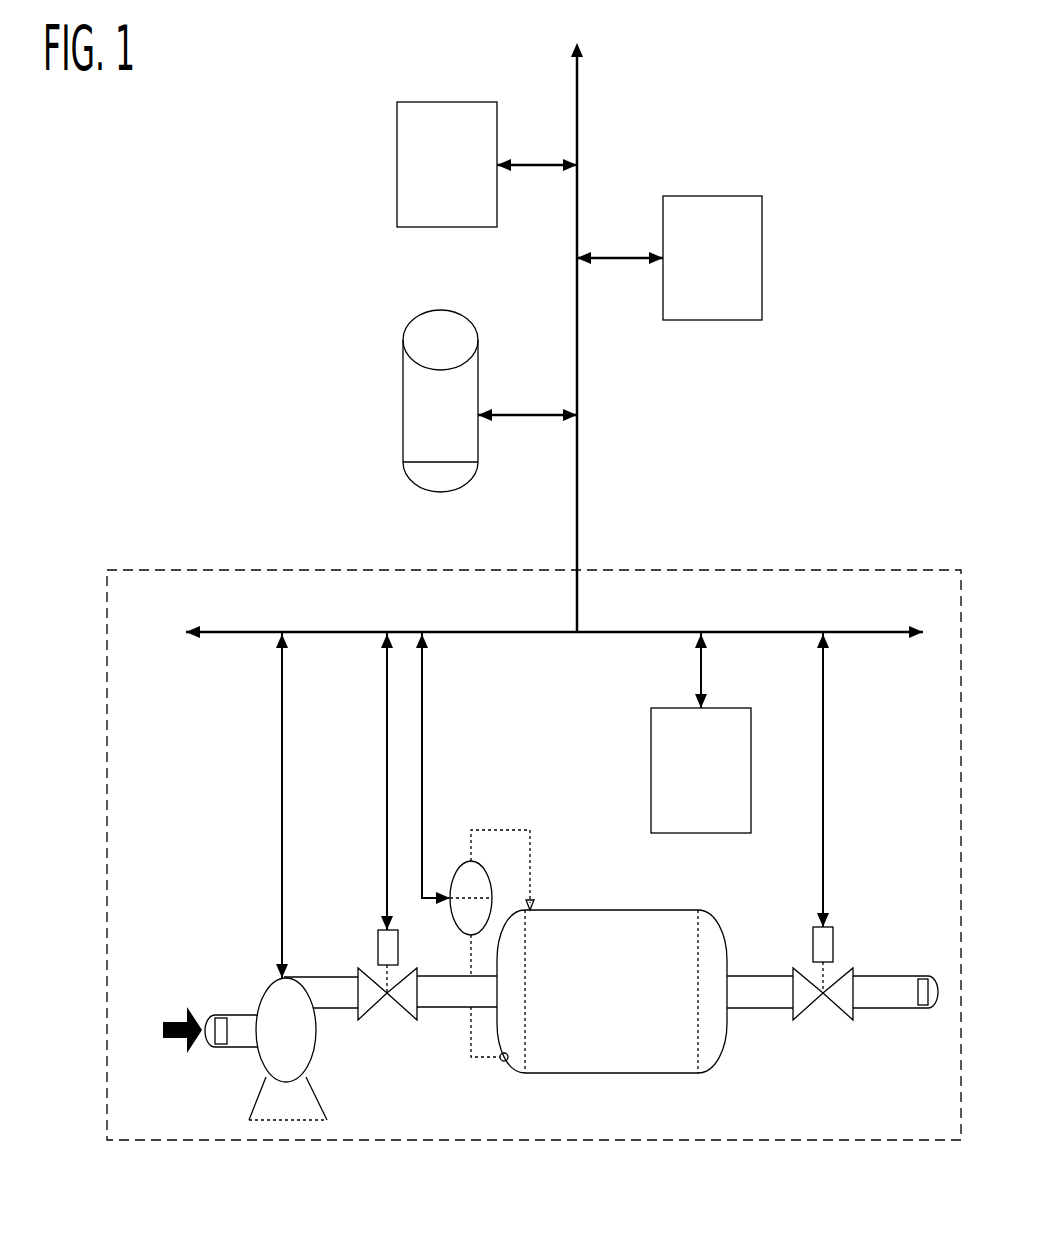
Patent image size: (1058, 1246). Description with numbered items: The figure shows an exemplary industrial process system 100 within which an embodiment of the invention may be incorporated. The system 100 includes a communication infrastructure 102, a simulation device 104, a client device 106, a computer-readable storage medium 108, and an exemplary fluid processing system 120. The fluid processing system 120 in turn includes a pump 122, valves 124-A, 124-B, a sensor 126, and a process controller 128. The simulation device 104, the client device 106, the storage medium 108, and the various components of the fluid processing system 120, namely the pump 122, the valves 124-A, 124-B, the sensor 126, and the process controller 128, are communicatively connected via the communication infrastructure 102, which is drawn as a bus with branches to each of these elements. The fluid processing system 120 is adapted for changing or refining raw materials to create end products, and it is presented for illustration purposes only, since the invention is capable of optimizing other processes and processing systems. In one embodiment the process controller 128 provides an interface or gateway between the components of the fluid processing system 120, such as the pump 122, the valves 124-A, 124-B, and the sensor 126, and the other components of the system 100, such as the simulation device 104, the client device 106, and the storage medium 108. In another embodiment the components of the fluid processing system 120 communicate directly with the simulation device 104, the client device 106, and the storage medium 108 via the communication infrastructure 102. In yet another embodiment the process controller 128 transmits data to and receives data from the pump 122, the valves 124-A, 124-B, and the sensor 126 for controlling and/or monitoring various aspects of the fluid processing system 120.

The system 100 is at (825, 50).
The communication infrastructure 102 is at (577, 124).
The simulation device 104 is at (763, 218).
The client device 106 is at (497, 114).
The computer-readable storage medium 108 is at (479, 342).
The fluid processing system 120 is at (197, 568).
The pump 122 is at (269, 984).
The valve 124-A is at (378, 946).
The valve 124-B is at (834, 946).
The sensor 126 is at (453, 872).
The process controller 128 is at (751, 735).